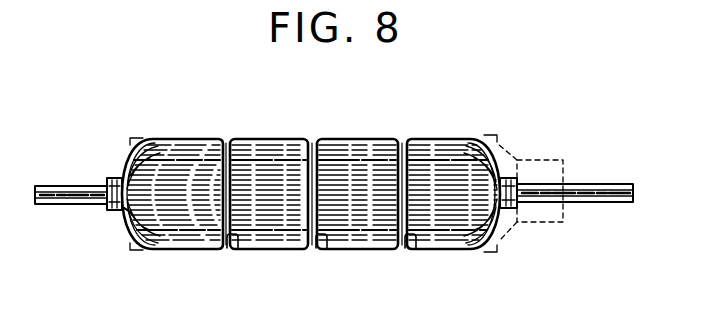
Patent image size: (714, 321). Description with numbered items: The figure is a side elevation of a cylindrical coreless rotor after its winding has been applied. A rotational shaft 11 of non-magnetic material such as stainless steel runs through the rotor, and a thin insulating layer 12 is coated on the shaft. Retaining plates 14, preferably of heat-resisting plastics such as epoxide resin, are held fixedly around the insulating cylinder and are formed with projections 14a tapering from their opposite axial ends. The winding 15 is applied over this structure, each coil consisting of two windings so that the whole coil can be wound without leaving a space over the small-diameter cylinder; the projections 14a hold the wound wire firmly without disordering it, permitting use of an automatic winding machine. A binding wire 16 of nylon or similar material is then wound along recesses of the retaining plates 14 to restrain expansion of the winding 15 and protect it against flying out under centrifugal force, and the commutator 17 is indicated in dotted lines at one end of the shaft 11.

The rotational shaft 11 is at (69, 186).
The insulating layer 12 is at (119, 178).
The retaining plate 14 is at (203, 143).
The projections 14a is at (134, 139).
The winding 15 is at (127, 211).
The binding wire 16 is at (233, 249).
The commutator 17 is at (537, 160).